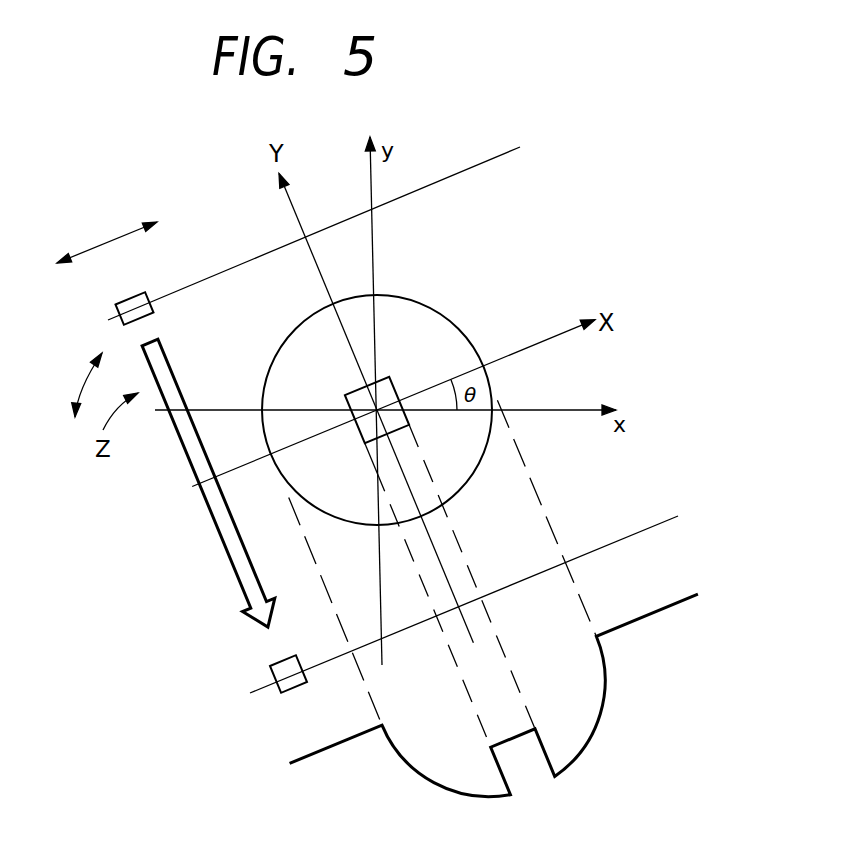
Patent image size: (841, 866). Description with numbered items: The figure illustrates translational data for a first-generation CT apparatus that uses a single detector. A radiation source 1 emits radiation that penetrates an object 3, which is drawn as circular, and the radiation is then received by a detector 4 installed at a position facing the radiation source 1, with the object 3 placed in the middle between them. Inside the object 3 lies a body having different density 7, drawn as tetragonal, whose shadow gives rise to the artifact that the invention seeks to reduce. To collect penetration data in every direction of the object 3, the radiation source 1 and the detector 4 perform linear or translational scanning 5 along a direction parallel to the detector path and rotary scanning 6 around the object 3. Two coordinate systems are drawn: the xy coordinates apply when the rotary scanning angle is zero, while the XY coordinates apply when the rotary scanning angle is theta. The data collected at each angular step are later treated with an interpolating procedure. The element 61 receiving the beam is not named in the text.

The radiation source 1 is at (132, 293).
The object 3 is at (450, 315).
The detector 4 is at (281, 693).
The linear (translational) scanning 5 is at (122, 230).
The rotary scanning 6 is at (80, 375).
The body having different density 7 is at (392, 380).
The target surface with notch 61 is at (678, 598).